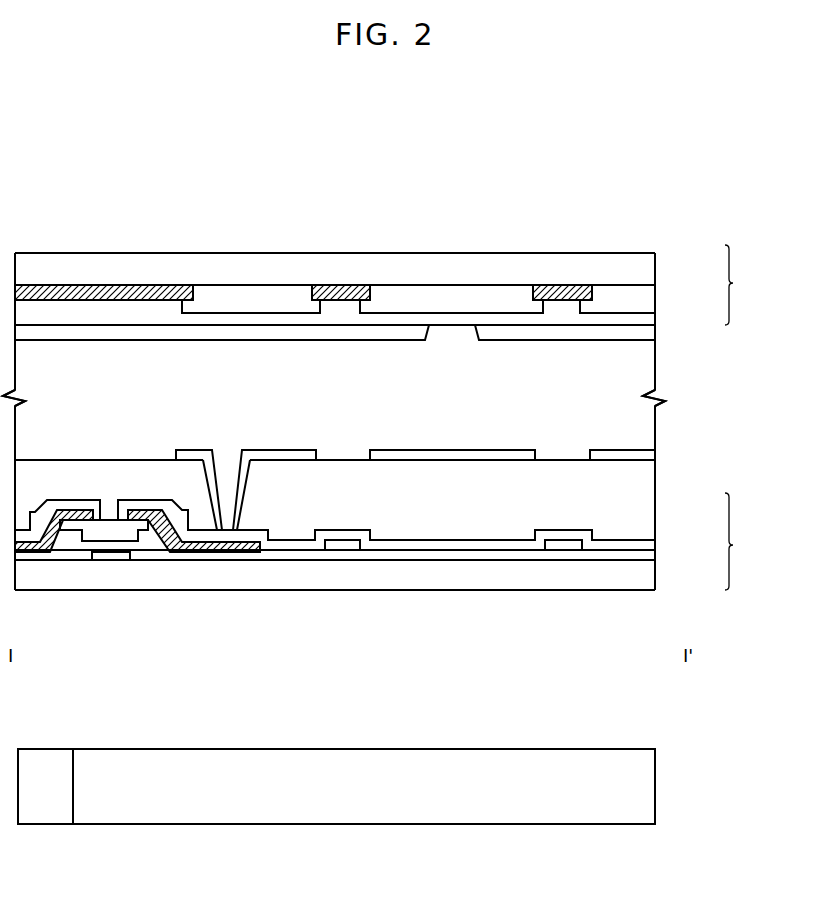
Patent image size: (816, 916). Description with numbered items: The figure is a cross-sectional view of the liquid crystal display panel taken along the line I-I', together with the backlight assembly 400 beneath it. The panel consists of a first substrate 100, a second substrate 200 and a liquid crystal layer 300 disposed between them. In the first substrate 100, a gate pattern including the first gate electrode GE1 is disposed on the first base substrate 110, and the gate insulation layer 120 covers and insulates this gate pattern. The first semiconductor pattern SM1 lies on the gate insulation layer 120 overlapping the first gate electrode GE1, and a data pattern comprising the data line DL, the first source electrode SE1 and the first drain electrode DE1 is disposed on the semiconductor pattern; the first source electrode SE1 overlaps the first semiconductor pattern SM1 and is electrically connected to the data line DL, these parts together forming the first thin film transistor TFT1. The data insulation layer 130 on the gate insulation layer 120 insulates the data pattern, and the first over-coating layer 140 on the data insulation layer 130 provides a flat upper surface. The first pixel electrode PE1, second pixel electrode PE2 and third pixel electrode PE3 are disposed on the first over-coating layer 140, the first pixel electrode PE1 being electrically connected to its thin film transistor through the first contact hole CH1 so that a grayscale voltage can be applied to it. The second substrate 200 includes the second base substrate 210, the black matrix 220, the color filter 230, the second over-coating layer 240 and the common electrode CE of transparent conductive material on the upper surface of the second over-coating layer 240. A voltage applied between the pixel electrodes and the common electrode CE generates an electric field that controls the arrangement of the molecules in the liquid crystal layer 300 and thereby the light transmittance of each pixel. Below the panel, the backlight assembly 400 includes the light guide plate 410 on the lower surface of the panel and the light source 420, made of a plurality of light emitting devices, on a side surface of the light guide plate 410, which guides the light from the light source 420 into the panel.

The second base substrate 210 is at (655, 264).
The black matrix 220 is at (580, 287).
The color filter 230 is at (655, 301).
The second over-coating layer 240 is at (655, 321).
The second substrate 200 is at (750, 285).
The common electrode CE is at (655, 333).
The liquid crystal layer 300 is at (655, 424).
The first over-coating layer 140 is at (655, 509).
The data insulation layer 130 is at (655, 546).
The gate insulation layer 120 is at (655, 553).
The first base substrate 110 is at (655, 581).
The first substrate 100 is at (751, 541).
The first thin film transistor TFT1 is at (137, 618).
The first gate electrode GE1 is at (110, 560).
The first semiconductor pattern SM1 is at (67, 548).
The first source electrode SE1 is at (40, 552).
The first drain electrode DE1 is at (194, 598).
The first pixel electrode PE1 is at (218, 535).
The first contact hole CH1 is at (228, 468).
The data line DL is at (343, 550).
The second pixel electrode PE2 is at (465, 460).
The third pixel electrode PE3 is at (617, 460).
The backlight assembly 400 is at (655, 787).
The light guide plate 410 is at (390, 816).
The light source 420 is at (46, 818).